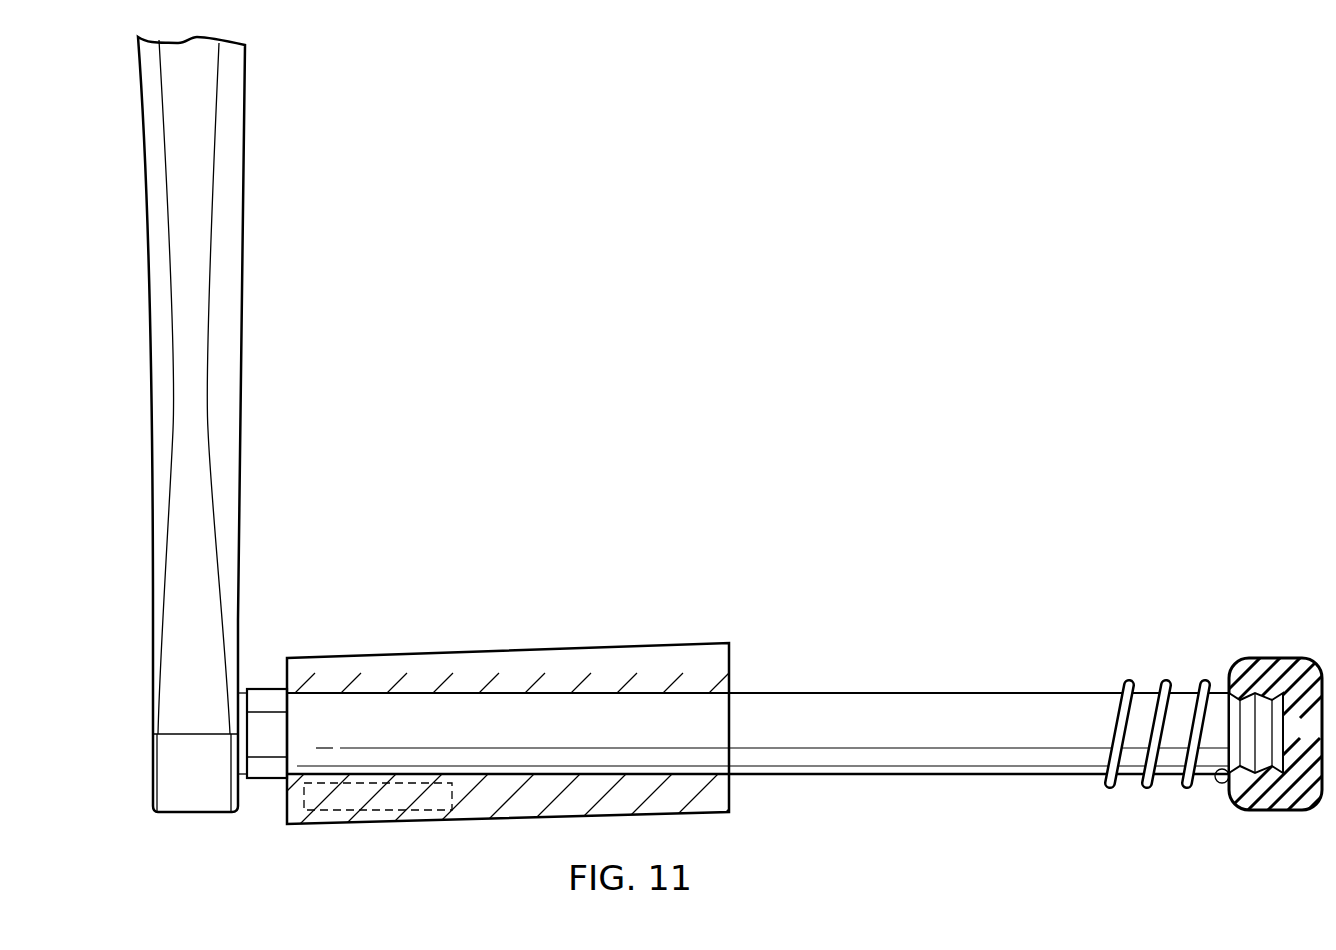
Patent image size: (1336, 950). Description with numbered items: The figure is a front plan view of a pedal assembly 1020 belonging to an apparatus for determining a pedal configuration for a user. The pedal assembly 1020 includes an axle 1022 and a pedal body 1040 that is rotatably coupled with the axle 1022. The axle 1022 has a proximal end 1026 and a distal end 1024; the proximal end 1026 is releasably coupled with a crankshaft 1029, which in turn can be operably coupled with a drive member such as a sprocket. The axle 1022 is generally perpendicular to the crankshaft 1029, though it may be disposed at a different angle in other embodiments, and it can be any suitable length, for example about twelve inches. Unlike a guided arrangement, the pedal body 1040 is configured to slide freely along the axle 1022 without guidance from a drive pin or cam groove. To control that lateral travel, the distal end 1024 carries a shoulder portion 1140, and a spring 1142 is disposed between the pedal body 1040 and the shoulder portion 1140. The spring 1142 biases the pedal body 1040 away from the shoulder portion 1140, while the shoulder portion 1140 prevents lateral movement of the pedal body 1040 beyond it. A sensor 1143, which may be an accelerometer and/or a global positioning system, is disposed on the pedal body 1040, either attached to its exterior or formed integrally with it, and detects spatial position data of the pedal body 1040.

The pedal assembly 1020 is at (796, 173).
The crankshaft 1029 is at (152, 325).
The proximal end 1026 is at (276, 656).
The axle 1022 is at (873, 693).
The pedal body 1040 is at (493, 652).
The sensor 1143 is at (385, 810).
The distal end 1024 is at (1212, 668).
The shoulder portion 1140 is at (1289, 648).
The spring 1142 is at (1126, 682).